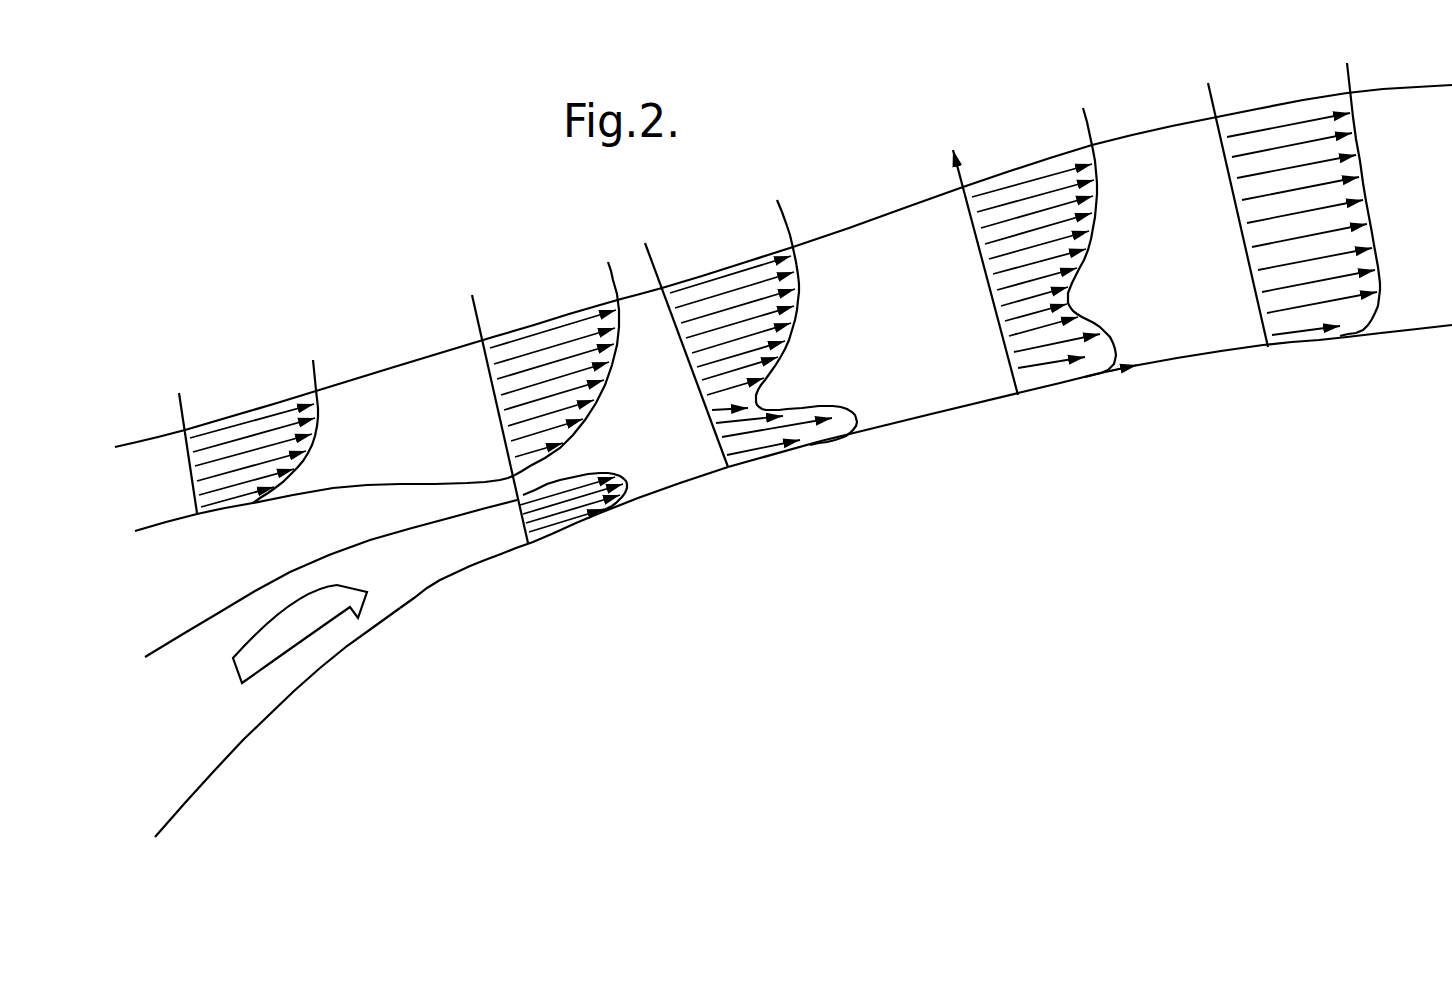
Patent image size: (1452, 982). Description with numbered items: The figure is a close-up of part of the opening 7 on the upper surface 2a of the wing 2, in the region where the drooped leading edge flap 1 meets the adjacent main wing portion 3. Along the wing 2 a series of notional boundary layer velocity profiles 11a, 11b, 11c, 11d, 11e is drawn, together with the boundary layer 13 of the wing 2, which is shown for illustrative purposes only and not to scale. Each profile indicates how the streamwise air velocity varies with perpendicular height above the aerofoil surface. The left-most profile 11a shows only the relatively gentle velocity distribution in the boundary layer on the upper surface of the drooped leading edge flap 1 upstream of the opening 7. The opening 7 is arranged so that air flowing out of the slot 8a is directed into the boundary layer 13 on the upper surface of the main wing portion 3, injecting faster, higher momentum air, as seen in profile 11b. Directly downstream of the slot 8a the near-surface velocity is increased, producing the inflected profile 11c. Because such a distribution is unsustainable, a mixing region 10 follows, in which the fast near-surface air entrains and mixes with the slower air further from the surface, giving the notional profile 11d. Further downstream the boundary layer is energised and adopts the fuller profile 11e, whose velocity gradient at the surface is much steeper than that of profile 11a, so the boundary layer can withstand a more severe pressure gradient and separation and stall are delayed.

The drooped leading edge flap 1 is at (212, 587).
The wing 2 is at (239, 266).
The upper surface 2a is at (1440, 328).
The main wing portion 3 is at (777, 632).
The opening 7 is at (222, 730).
The slot 8a is at (478, 550).
The mixing region 10 is at (912, 343).
The velocity profile 11a is at (203, 413).
The velocity profile 11b is at (580, 294).
The velocity profile 11c is at (725, 258).
The velocity profile 11d is at (1018, 154).
The velocity profile 11e is at (1272, 98).
The boundary layer 13 is at (392, 405).